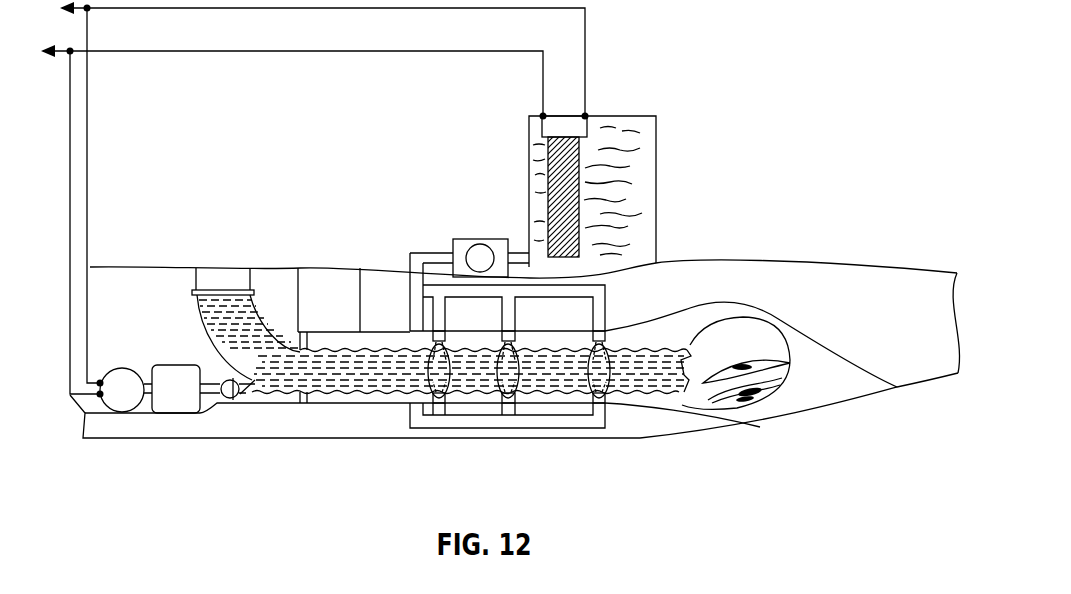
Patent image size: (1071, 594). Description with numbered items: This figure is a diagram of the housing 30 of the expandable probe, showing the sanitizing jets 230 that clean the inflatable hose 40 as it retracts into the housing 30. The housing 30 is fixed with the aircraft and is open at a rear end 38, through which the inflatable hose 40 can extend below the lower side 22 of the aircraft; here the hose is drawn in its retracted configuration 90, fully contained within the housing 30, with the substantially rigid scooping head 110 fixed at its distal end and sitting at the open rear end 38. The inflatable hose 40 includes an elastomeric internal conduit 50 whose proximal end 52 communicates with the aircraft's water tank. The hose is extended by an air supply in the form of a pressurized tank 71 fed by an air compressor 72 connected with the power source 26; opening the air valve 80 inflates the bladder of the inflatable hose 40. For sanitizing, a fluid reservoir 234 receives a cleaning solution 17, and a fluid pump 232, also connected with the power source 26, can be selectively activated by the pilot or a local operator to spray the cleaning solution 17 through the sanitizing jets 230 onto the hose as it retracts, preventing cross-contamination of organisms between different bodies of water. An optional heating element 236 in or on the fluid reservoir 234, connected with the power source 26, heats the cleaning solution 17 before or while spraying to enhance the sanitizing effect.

The cleaning solution 17 is at (645, 210).
The lower side 22 is at (358, 440).
The power source 26 is at (112, 84).
The housing 30 is at (653, 322).
The rear end 38 is at (860, 425).
The inflatable hose 40 is at (330, 385).
The elastomeric internal conduit 50 is at (527, 363).
The proximal end 52 is at (313, 360).
The pressurized tank 71 is at (167, 365).
The air compressor 72 is at (112, 378).
The air valve 80 is at (233, 395).
The retracted configuration 90 is at (634, 422).
The scooping head 110 is at (755, 330).
The sanitizing jets 230 is at (445, 350).
The fluid pump 232 is at (480, 252).
The fluid reservoir 234 is at (643, 116).
The heating element 236 is at (579, 188).